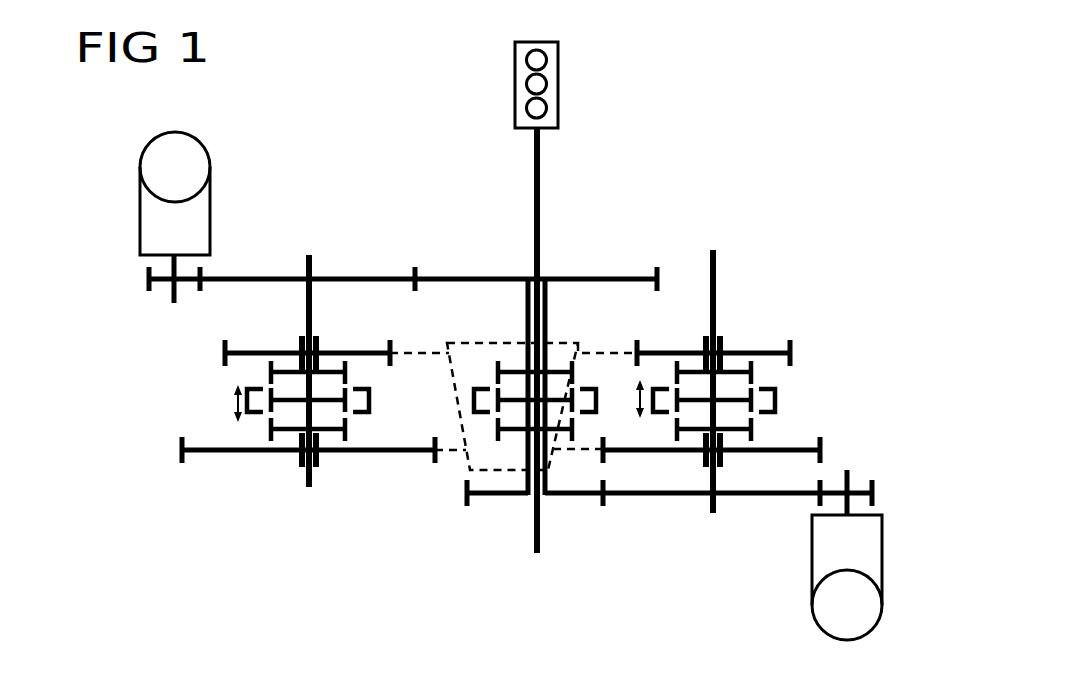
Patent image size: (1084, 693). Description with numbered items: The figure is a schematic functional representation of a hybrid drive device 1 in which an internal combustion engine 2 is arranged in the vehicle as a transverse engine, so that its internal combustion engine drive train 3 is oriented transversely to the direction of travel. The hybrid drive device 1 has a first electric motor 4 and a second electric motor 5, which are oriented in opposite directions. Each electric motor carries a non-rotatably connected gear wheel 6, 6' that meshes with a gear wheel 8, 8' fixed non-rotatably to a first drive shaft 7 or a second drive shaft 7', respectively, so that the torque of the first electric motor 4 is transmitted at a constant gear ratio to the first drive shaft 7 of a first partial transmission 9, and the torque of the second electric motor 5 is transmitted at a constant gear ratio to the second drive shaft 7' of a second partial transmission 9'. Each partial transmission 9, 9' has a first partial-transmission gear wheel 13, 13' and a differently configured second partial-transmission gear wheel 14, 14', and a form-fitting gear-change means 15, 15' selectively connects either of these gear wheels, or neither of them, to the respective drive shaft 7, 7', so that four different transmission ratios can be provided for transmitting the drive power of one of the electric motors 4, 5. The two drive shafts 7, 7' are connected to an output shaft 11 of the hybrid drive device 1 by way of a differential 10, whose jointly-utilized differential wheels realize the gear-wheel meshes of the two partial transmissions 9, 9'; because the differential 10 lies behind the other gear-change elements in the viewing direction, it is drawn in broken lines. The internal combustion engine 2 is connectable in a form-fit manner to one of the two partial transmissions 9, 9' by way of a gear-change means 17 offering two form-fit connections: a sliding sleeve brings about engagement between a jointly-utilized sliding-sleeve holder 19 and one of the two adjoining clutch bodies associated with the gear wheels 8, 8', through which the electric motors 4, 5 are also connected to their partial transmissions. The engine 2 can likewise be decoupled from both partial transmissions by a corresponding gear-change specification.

The hybrid drive device 1 is at (775, 110).
The internal combustion engine 2 is at (558, 86).
The internal combustion engine drive train 3 is at (540, 181).
The first electric motor 4 is at (882, 555).
The second electric motor 5 is at (140, 212).
The gear wheel 6 is at (875, 470).
The gear wheel 6' is at (137, 289).
The first drive shaft 7 is at (700, 356).
The second drive shaft 7' is at (320, 339).
The gear wheel 8 is at (669, 520).
The gear wheel 8' is at (403, 241).
The first partial transmission 9 is at (737, 356).
The second partial transmission 9' is at (265, 376).
The differential 10 is at (466, 473).
The output shaft 11 is at (520, 321).
The first partial-transmission gear wheel 13 is at (713, 327).
The first partial-transmission gear wheel 13' is at (265, 342).
The second partial-transmission gear wheel 14 is at (737, 431).
The second partial-transmission gear wheel 14' is at (290, 479).
The gear-change means 15 is at (760, 398).
The gear-change means 15' is at (232, 401).
The gear-change means 17 is at (597, 405).
The sliding-sleeve holder 19 is at (549, 396).